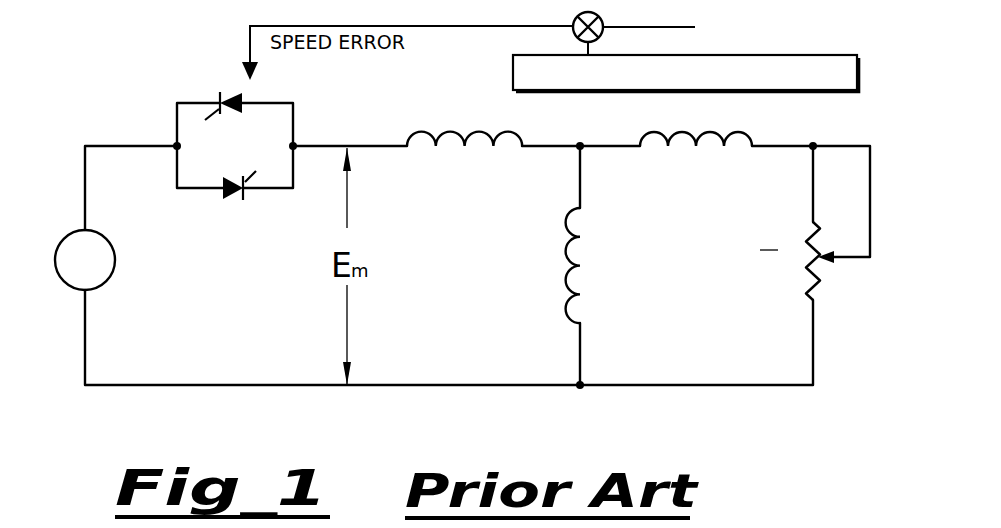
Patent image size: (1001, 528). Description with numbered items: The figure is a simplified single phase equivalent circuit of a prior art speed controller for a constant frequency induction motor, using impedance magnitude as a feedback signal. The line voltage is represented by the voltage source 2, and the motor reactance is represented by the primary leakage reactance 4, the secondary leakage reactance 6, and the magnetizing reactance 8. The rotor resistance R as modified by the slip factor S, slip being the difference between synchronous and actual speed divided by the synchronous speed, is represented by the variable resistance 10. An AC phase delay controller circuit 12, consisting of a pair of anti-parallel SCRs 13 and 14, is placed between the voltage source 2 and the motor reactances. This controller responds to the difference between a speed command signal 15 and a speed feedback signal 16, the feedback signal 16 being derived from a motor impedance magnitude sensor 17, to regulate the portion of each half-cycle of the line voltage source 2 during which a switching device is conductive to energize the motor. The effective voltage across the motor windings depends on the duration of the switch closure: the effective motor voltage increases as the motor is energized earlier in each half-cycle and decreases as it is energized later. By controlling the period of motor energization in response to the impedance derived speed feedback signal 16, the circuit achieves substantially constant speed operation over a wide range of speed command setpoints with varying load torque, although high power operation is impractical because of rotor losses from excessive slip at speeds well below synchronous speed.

The voltage source 2 is at (107, 281).
The primary leakage reactance 4 is at (473, 146).
The secondary leakage reactance 6 is at (703, 146).
The magnetizing reactance 8 is at (562, 294).
The variable resistance 10 is at (820, 283).
The AC phase delay controller circuit 12 is at (235, 147).
The SCR 13 is at (226, 90).
The SCR 14 is at (240, 200).
The speed command signal 15 is at (640, 30).
The speed feedback signal 16 is at (573, 47).
The motor impedance magnitude sensor 17 is at (787, 91).